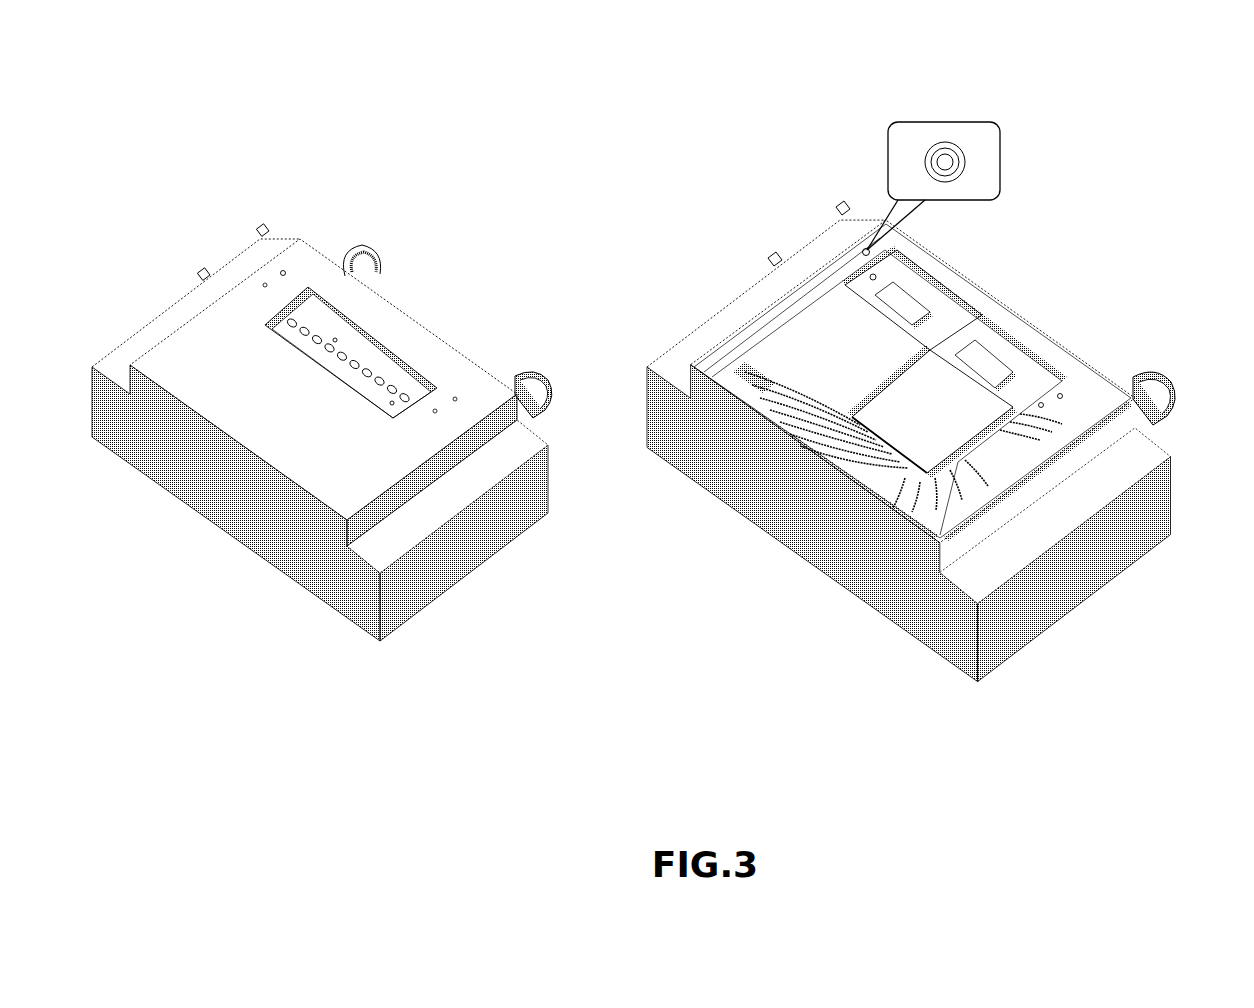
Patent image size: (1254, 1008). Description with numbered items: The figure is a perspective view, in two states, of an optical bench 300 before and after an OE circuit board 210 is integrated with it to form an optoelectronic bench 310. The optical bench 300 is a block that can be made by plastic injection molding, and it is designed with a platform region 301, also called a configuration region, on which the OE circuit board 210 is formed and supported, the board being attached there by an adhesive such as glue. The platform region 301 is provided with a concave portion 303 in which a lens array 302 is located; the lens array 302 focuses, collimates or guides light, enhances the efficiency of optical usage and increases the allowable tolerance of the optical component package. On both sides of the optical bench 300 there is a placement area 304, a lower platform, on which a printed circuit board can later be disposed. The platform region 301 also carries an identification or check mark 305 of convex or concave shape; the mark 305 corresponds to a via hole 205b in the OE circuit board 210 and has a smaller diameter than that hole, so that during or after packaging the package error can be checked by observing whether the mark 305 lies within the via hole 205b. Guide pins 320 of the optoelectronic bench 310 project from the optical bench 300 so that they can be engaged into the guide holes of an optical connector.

The optical bench 300 is at (408, 597).
The platform region 301 is at (245, 378).
The lens array 302 is at (343, 357).
The concave portion 303 is at (410, 375).
The placement area 304 is at (197, 285).
The mark 305 is at (283, 272).
The guide pins 320 is at (535, 378).
The optoelectronic bench 310 is at (812, 600).
The OE circuit board 210 is at (830, 437).
The via hole 205b is at (950, 140).